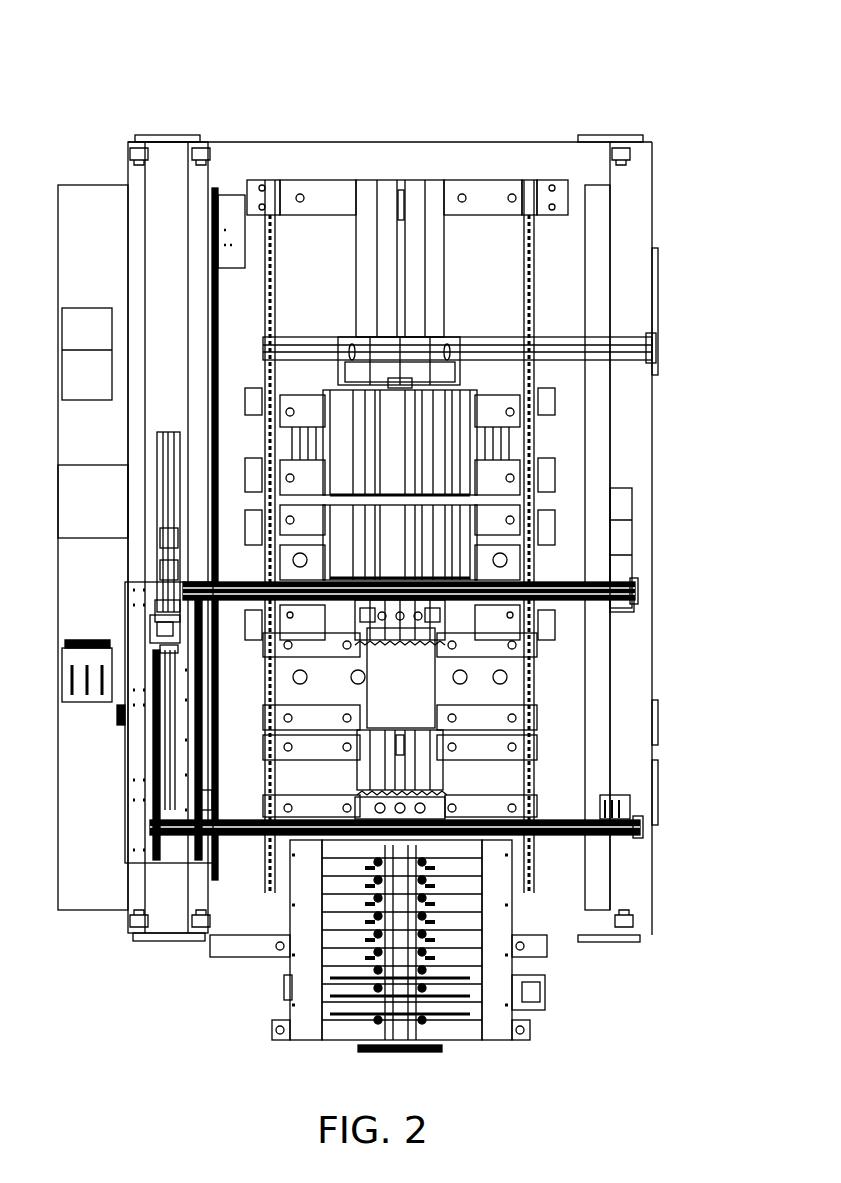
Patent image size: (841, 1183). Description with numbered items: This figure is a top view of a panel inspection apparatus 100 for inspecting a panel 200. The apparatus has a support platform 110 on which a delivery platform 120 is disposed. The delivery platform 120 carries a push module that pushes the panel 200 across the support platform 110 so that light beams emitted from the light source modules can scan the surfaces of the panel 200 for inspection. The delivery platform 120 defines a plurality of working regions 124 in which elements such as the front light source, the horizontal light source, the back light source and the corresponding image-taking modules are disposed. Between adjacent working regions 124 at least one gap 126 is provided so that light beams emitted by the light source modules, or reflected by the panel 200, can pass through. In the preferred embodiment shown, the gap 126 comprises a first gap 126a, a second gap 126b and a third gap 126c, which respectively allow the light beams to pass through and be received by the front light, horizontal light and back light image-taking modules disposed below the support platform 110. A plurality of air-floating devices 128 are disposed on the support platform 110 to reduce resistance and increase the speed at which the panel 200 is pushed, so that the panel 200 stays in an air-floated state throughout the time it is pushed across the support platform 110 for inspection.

The panel inspection apparatus 100 is at (90, 42).
The support platform 110 is at (263, 988).
The delivery platform 120 is at (139, 659).
The working regions 124 is at (248, 443).
The gap 126 is at (715, 385).
The first gap 126a is at (501, 631).
The second gap 126b is at (489, 509).
The third gap 126c is at (514, 394).
The air-floating devices 128 is at (413, 205).
The panel 200 is at (415, 705).